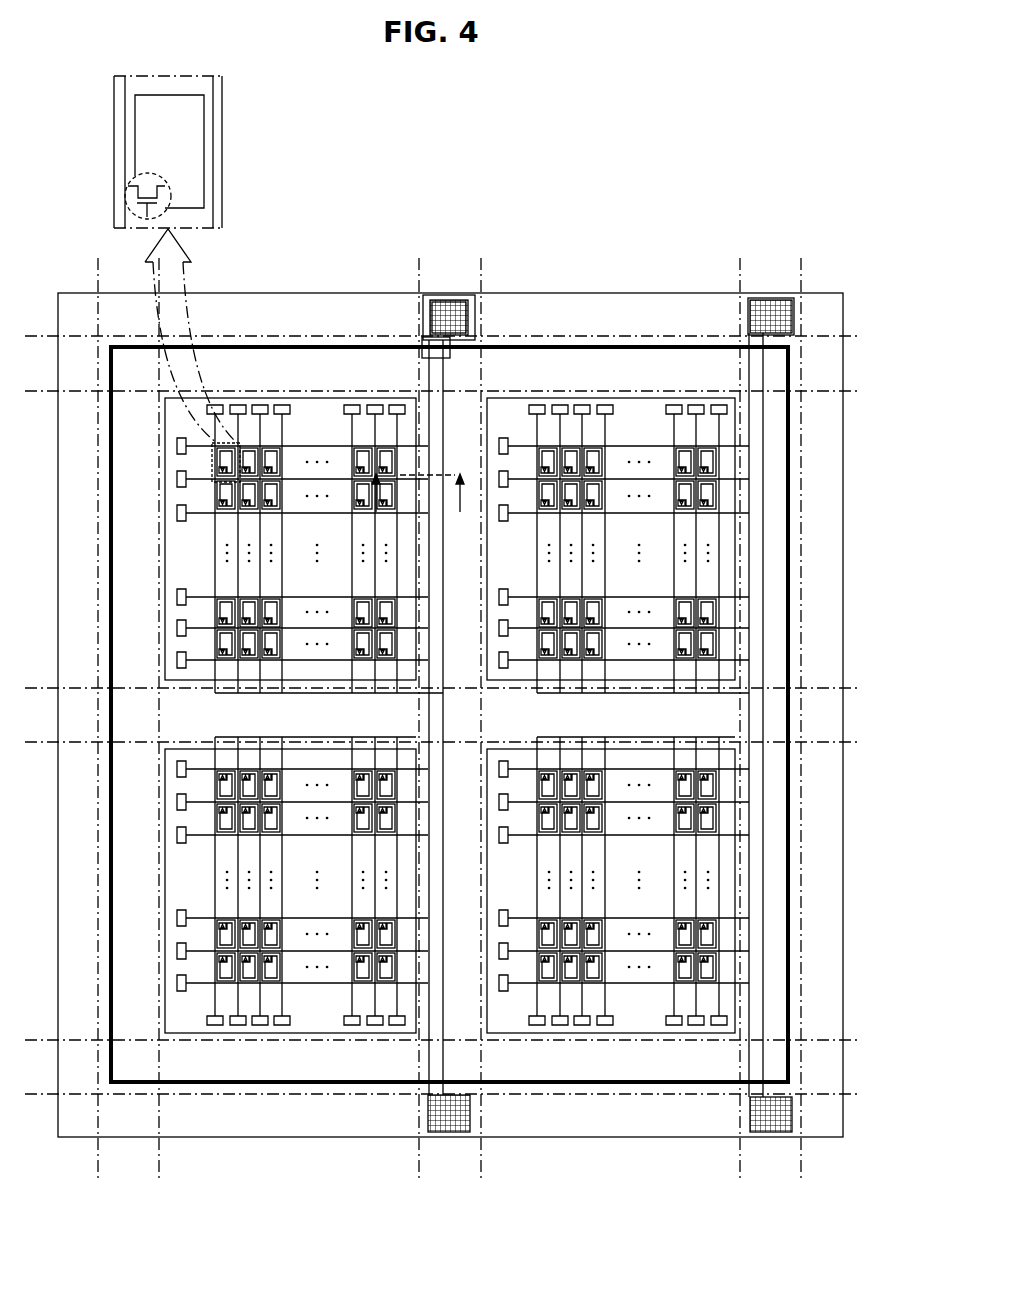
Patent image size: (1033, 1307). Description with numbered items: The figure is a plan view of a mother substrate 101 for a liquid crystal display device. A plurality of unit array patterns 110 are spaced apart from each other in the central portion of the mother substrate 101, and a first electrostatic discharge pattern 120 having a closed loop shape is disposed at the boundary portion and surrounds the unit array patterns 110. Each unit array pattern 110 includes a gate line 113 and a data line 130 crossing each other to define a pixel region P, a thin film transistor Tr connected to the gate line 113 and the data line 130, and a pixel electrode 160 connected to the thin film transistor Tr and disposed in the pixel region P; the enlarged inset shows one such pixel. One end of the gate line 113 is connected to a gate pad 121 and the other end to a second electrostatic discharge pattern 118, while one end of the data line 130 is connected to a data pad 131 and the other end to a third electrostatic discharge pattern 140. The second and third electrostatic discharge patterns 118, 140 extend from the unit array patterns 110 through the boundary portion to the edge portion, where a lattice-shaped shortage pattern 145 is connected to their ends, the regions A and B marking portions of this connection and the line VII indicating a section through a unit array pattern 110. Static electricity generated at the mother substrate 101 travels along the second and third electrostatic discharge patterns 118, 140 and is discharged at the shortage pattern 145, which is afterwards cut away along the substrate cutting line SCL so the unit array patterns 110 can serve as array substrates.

The mother substrate 101 is at (768, 237).
The unit array pattern 110 is at (295, 390).
The gate line 113 is at (296, 598).
The second electrostatic discharge pattern 118 is at (431, 582).
The first electrostatic discharge pattern 120 is at (800, 737).
The gate pad 121 is at (170, 512).
The data line 130 is at (284, 526).
The data pad 131 is at (354, 392).
The third electrostatic discharge pattern 140 is at (468, 642).
The shortage pattern 145 is at (475, 316).
The pixel electrode 160 is at (212, 162).
The pixel region P is at (190, 124).
The thin film transistor Tr is at (125, 194).
The region A is at (428, 294).
The region B is at (451, 352).
The substrate cutting line SCL is at (418, 1118).
The section line VII is at (415, 507).